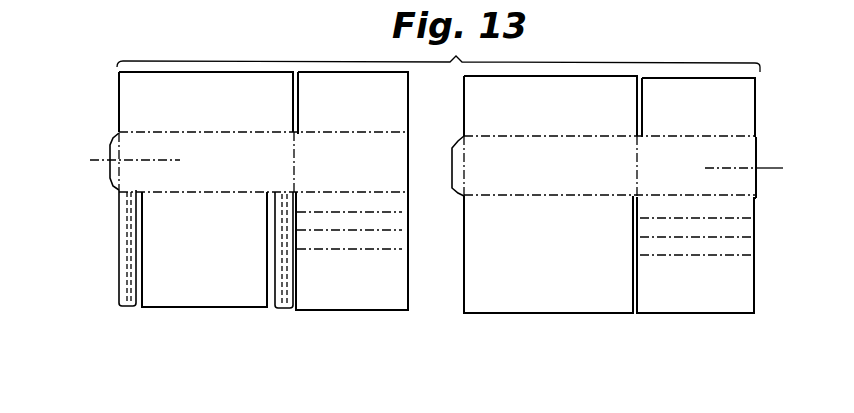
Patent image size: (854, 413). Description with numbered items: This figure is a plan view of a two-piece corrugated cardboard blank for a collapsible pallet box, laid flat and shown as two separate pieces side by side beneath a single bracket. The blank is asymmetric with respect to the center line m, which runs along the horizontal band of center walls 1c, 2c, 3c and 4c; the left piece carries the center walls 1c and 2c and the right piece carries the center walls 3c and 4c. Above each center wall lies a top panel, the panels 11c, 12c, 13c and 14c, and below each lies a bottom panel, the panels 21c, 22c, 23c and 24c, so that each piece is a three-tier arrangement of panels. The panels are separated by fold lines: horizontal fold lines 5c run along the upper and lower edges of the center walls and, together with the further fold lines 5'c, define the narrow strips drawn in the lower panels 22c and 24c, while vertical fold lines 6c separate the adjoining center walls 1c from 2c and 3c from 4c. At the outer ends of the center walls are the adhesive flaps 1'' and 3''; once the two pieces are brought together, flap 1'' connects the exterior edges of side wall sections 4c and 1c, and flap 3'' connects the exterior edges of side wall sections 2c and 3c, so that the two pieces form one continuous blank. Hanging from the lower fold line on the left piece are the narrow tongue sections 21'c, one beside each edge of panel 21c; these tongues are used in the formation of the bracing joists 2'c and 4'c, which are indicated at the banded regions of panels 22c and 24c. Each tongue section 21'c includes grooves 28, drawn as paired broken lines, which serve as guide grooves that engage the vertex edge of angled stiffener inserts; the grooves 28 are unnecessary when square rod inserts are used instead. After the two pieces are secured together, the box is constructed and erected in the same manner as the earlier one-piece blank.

The top panel 11c is at (228, 86).
The top panel 12c is at (366, 112).
The top panel 13c is at (566, 114).
The top panel 14c is at (710, 117).
The center wall 1c is at (218, 174).
The center wall 2c is at (372, 175).
The center wall 3c is at (562, 179).
The center wall 4c is at (700, 175).
The fold line 5c is at (233, 131).
The fold line 5'c is at (524, 266).
The fold line 6c is at (297, 170).
The bottom panel 21c is at (225, 257).
The bottom panel 22c is at (365, 279).
The bottom panel 23c is at (572, 264).
The bottom panel 24c is at (712, 285).
The tongue section 21'c is at (196, 270).
The bracing joist 2'c is at (419, 219).
The bracing joist 4'c is at (766, 229).
The guide groove 28 is at (128, 230).
The center line m is at (431, 155).
The adhesive flap 1'' is at (98, 166).
The adhesive flap 3'' is at (448, 166).